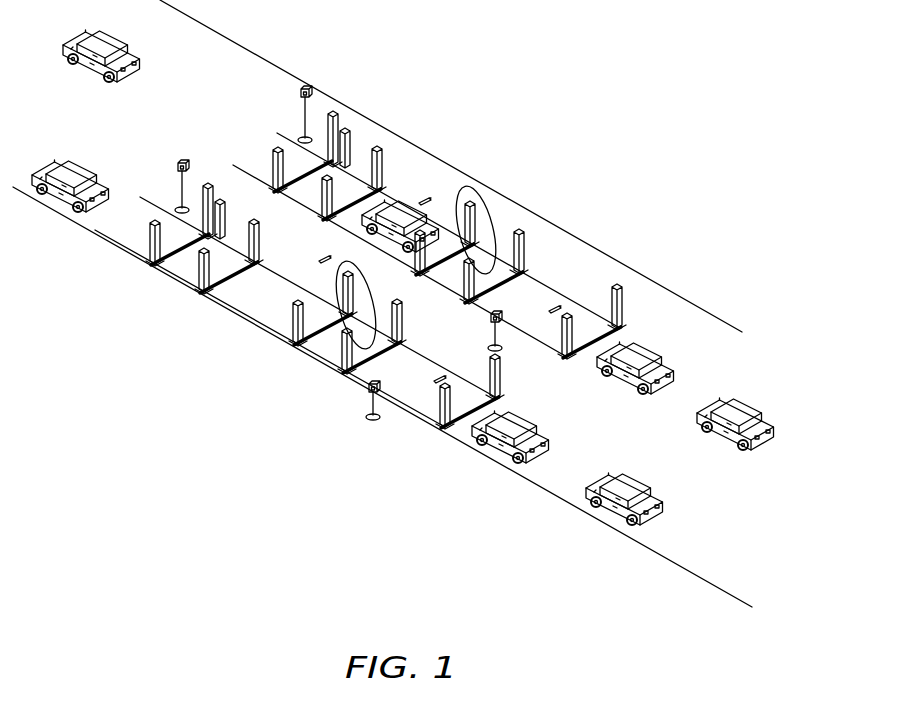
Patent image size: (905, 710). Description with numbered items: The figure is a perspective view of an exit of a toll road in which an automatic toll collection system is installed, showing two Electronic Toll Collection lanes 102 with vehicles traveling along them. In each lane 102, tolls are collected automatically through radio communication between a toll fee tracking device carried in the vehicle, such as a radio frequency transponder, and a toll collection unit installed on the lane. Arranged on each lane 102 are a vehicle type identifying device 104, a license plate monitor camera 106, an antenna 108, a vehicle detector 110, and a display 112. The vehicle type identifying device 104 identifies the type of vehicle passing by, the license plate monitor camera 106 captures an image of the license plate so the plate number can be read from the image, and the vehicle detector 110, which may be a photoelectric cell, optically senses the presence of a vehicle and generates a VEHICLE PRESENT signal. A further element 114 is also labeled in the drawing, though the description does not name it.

The Electronic Toll Collection lane 102 is at (633, 386).
The vehicle type identifying device 104 is at (437, 430).
The license plate monitor camera 106 is at (367, 394).
The antenna 108 is at (352, 322).
The vehicle detector 110 is at (287, 344).
The display 112 is at (260, 268).
The detector column 114 is at (211, 186).